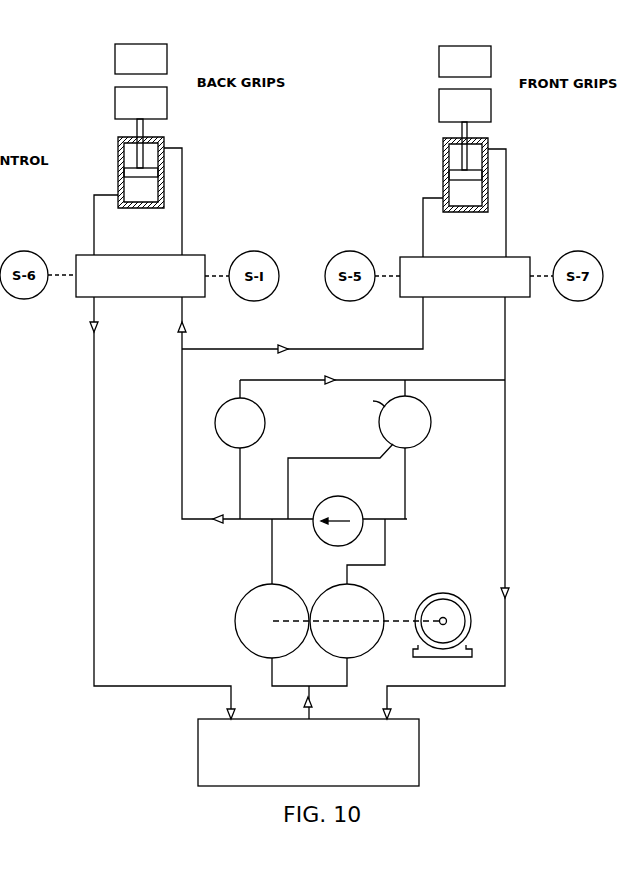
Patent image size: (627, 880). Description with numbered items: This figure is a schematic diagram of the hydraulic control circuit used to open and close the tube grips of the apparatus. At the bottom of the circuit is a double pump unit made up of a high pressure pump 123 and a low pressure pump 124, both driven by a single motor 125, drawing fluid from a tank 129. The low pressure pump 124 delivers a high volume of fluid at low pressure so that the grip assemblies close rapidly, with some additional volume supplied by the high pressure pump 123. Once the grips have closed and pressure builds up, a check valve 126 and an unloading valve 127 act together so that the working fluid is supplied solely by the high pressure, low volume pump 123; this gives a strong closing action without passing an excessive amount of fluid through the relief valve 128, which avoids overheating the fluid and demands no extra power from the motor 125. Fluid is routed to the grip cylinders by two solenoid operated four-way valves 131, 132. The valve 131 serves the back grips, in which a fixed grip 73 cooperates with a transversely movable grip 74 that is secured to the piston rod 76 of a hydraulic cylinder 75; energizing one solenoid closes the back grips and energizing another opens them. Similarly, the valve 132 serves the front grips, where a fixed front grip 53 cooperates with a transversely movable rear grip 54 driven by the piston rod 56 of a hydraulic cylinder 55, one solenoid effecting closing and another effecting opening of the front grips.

The fixed front grip 53 is at (437, 60).
The transversely movable rear grip 54 is at (443, 105).
The hydraulic cylinder 55 is at (442, 156).
The piston rod 56 is at (460, 127).
The fixed grip 73 is at (112, 66).
The transversely movable grip 74 is at (112, 104).
The hydraulic cylinder 75 is at (117, 158).
The piston rod 76 is at (145, 131).
The high pressure pump 123 is at (258, 586).
The low pressure pump 124 is at (367, 588).
The motor 125 is at (450, 594).
The check valve 126 is at (354, 502).
The unloading valve 127 is at (431, 436).
The relief valve 128 is at (266, 427).
The tank 129 is at (416, 749).
The 4-way valve 131 is at (190, 255).
The 4-way valve 132 is at (408, 257).